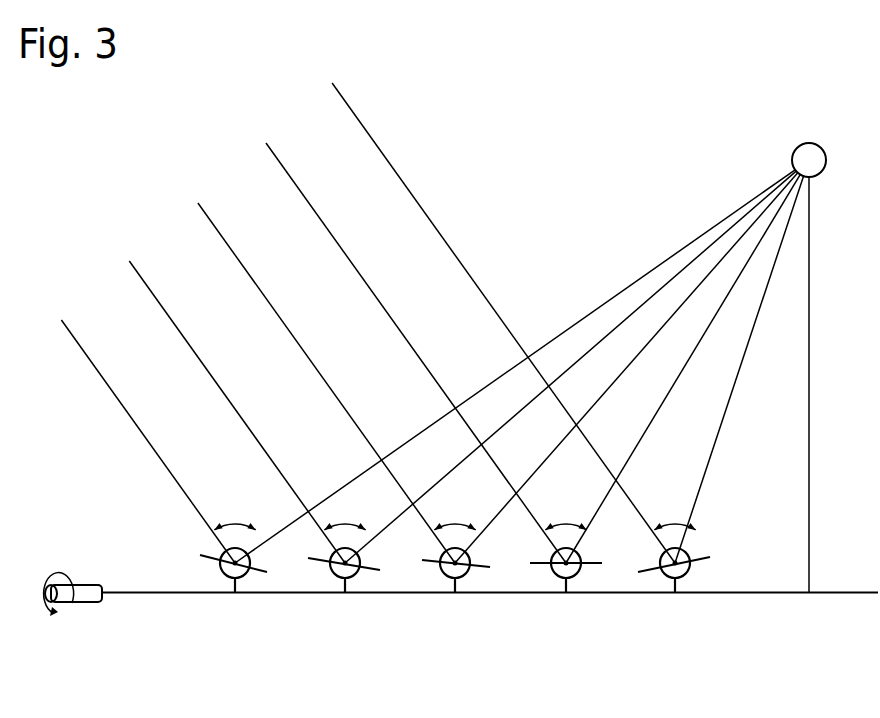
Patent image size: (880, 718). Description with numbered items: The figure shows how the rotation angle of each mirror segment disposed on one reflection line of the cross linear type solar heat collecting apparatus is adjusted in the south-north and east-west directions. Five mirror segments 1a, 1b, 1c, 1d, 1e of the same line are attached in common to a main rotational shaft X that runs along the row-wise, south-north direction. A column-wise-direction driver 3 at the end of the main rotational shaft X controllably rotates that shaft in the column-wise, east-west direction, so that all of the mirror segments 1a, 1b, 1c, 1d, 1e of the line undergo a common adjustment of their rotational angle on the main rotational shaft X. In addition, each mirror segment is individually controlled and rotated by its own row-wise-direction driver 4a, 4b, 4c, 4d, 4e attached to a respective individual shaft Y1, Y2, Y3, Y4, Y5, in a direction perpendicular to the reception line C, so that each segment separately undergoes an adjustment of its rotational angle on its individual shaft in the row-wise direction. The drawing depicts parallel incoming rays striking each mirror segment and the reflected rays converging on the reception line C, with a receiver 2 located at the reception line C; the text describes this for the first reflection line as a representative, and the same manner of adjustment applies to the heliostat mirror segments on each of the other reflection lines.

The mirror segment 1a is at (255, 591).
The mirror segment 1b is at (355, 591).
The mirror segment 1c is at (466, 591).
The mirror segment 1d is at (572, 591).
The mirror segment 1e is at (685, 591).
The light receiving target (receiver) 2 is at (806, 152).
The column-wise-direction driver 3 is at (87, 602).
The row-wise-direction driver 4a is at (238, 514).
The row-wise-direction driver 4b is at (348, 514).
The row-wise-direction driver 4c is at (457, 514).
The row-wise-direction driver 4d is at (569, 514).
The row-wise-direction driver 4e is at (678, 514).
The main rotational shaft X is at (177, 593).
The individual shaft Y1 is at (266, 624).
The individual shaft Y2 is at (368, 624).
The individual shaft Y3 is at (486, 625).
The individual shaft Y4 is at (597, 625).
The individual shaft Y5 is at (708, 625).
The reception line C is at (845, 142).